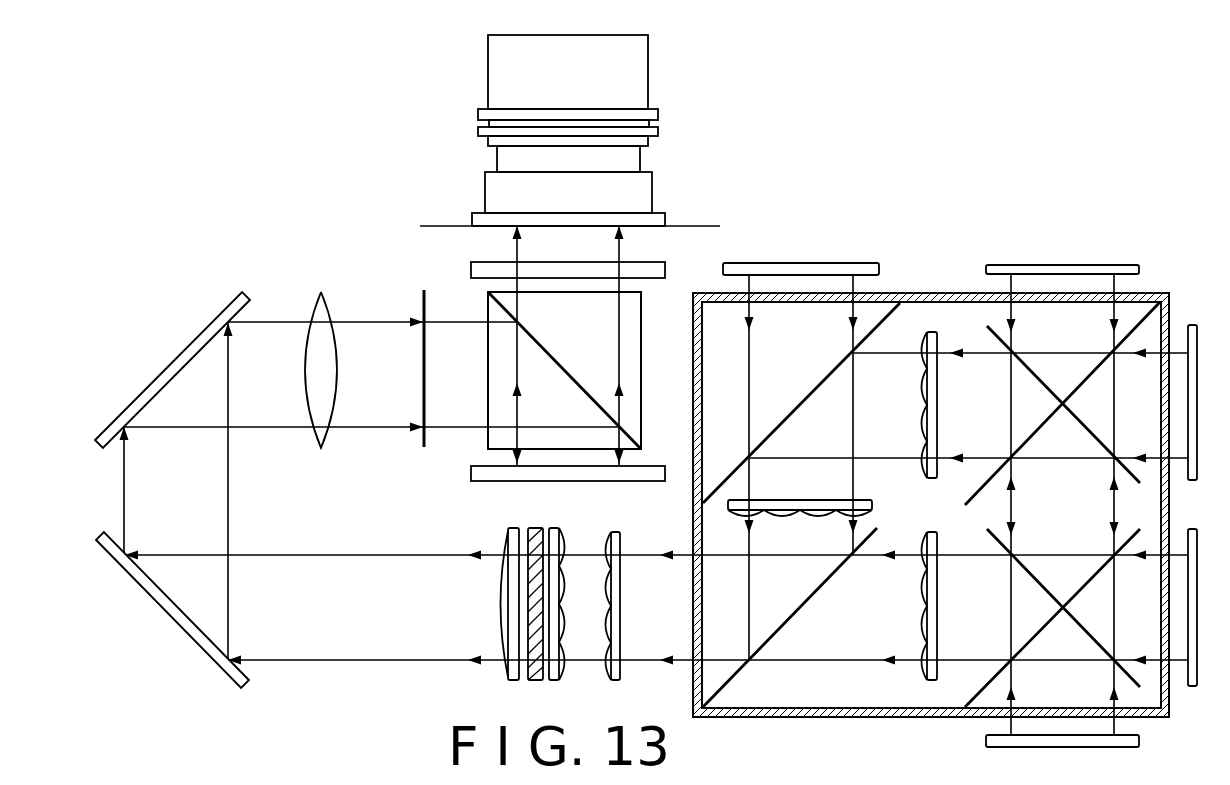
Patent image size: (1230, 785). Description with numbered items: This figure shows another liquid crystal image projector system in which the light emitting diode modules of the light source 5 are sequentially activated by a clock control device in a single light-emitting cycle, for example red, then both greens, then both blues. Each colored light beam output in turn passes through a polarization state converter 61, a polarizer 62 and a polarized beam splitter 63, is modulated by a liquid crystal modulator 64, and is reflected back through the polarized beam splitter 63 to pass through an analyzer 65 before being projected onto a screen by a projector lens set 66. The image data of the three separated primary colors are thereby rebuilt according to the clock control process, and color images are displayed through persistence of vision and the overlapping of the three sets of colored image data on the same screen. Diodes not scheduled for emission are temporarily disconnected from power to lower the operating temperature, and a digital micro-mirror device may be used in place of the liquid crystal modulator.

The light source 5 is at (836, 210).
The polarization state converter 61 is at (538, 683).
The polarizer 62 is at (426, 311).
The polarized beam splitter 63 is at (580, 386).
The liquid crystal modulator 64 is at (607, 478).
The analyzer 65 is at (650, 270).
The projector lens set 66 is at (645, 92).